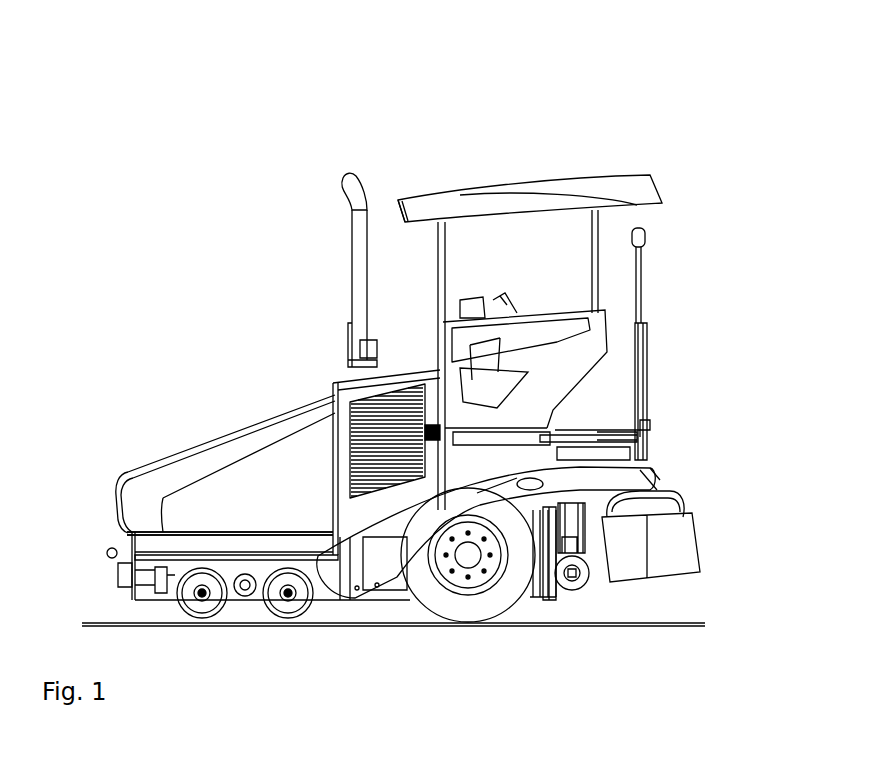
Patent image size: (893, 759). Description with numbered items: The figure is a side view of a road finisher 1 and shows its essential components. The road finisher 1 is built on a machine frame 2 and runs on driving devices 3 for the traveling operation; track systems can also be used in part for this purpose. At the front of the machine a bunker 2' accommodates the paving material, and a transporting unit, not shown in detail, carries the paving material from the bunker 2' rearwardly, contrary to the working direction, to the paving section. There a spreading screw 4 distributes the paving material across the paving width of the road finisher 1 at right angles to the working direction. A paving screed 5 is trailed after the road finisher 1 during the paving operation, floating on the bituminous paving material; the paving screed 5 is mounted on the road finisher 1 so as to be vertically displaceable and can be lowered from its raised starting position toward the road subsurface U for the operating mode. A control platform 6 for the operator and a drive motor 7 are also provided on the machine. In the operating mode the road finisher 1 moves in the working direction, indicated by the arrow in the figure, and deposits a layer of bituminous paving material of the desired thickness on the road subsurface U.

The road finisher 1 is at (590, 102).
The machine frame 2 is at (186, 561).
The bunker 2' is at (205, 459).
The driving devices 3 is at (453, 603).
The spreading screw 4 is at (572, 580).
The paving screed 5 is at (655, 531).
The control platform 6 is at (532, 330).
The drive motor 7 is at (373, 423).
The road subsurface U is at (622, 627).